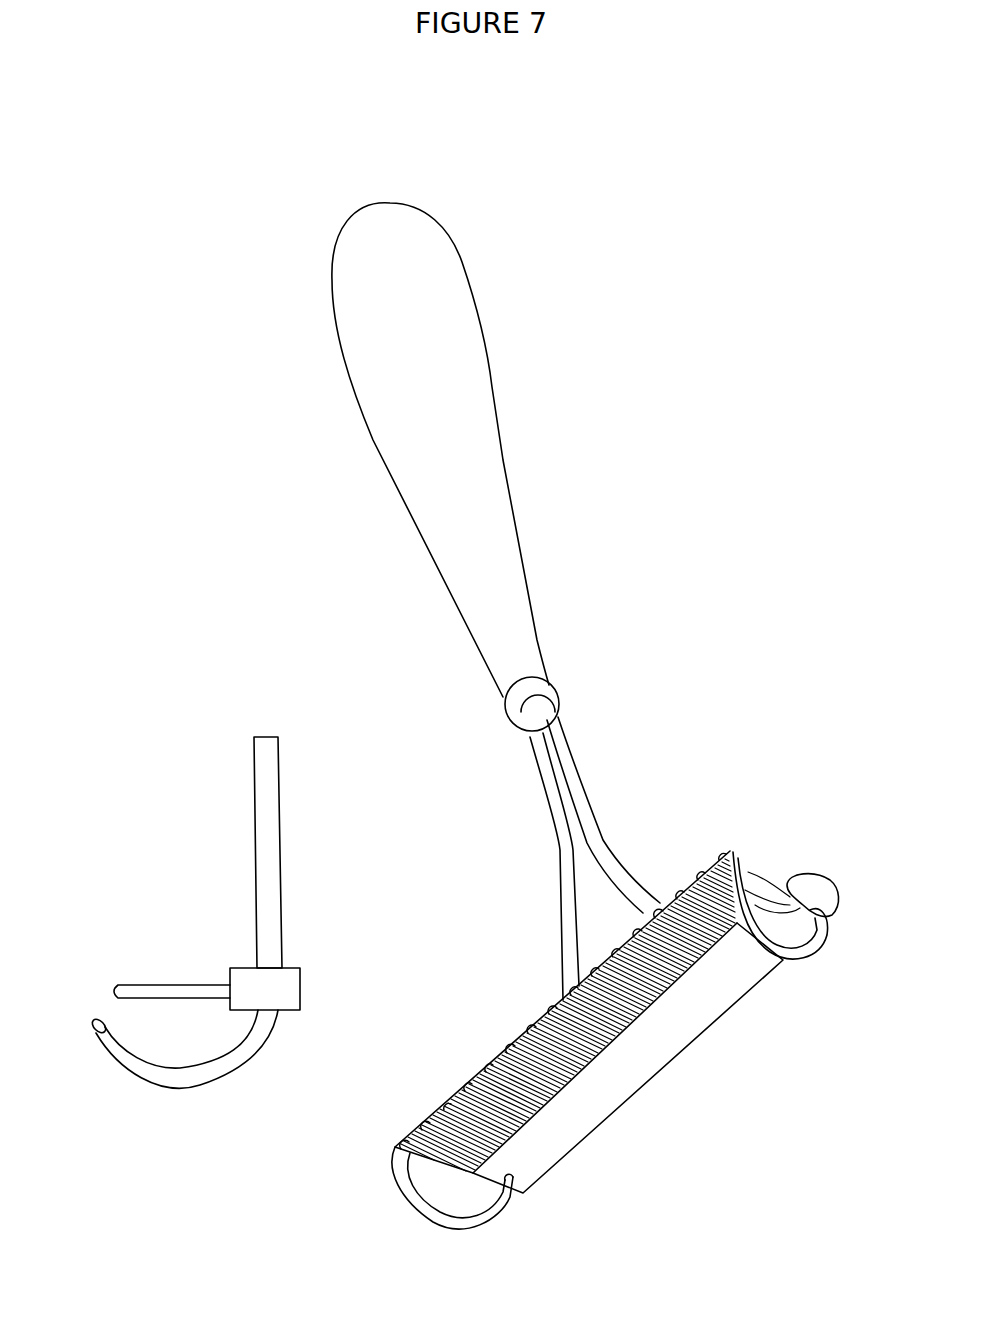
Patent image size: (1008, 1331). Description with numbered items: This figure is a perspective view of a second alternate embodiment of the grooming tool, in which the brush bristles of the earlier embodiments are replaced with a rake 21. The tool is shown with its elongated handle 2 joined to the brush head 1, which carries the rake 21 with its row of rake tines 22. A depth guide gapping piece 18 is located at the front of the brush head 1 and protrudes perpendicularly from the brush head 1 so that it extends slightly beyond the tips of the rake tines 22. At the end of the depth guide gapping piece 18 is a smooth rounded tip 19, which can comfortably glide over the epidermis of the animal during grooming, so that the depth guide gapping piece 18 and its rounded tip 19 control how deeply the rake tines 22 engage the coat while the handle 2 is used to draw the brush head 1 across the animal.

The handle 2 is at (493, 385).
The rake 21 is at (813, 836).
The depth guide gapping piece 18 is at (512, 1203).
The brush head 1 is at (300, 977).
The smooth rounded tip 19 is at (94, 1022).
The rake tines 22 is at (113, 988).